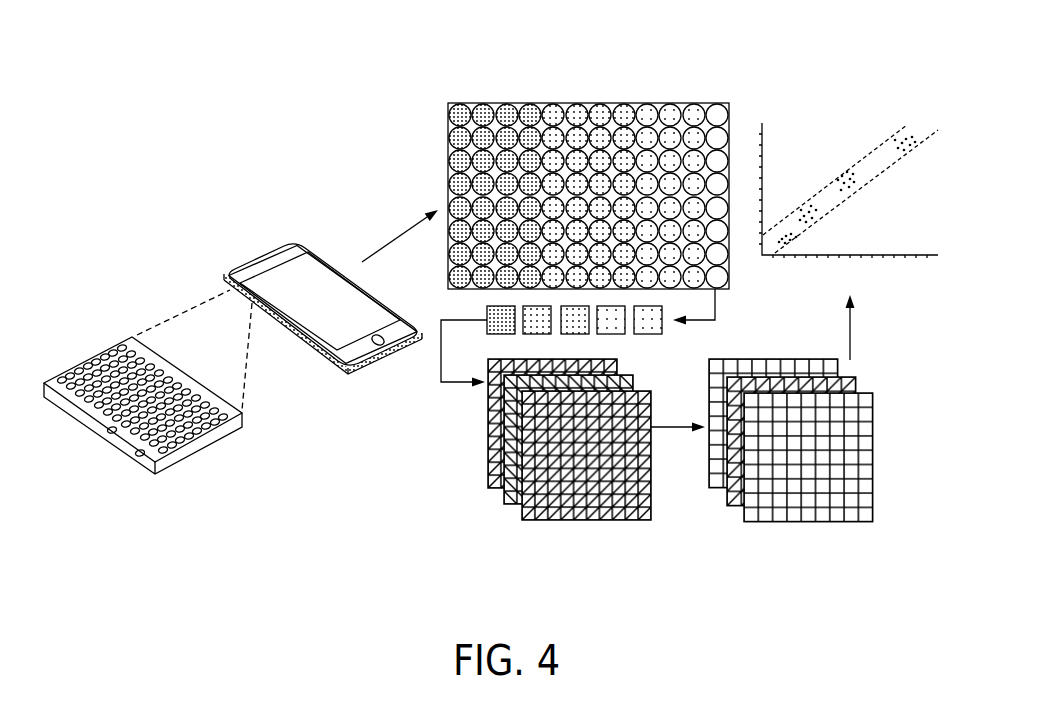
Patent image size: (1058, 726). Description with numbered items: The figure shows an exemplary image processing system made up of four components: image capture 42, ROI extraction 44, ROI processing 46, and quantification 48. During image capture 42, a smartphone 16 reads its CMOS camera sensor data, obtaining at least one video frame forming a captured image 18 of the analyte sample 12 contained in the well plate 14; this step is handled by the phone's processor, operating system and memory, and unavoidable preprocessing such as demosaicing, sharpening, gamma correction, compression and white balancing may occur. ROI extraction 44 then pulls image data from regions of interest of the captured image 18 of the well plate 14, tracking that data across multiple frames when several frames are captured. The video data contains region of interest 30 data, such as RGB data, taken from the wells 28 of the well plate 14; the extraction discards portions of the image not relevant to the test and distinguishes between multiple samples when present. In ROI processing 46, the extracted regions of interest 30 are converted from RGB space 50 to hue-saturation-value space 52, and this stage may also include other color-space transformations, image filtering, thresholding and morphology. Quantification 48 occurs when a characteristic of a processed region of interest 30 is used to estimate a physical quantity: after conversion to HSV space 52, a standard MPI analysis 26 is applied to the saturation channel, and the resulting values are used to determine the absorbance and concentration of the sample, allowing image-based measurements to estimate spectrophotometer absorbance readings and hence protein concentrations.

The analyte sample 12 is at (122, 347).
The well plate 14 is at (227, 438).
The mobile device 16 is at (266, 243).
The captured image 18 is at (553, 102).
The MPI analysis 26 is at (895, 196).
The wells 28 is at (140, 453).
The region of interest 30 is at (448, 119).
The image capture 42 is at (166, 306).
The ROI extraction 44 is at (370, 210).
The ROI processing 46 is at (572, 535).
The quantification 48 is at (887, 333).
The RGB space 50 is at (465, 522).
The HSV space 52 is at (889, 448).